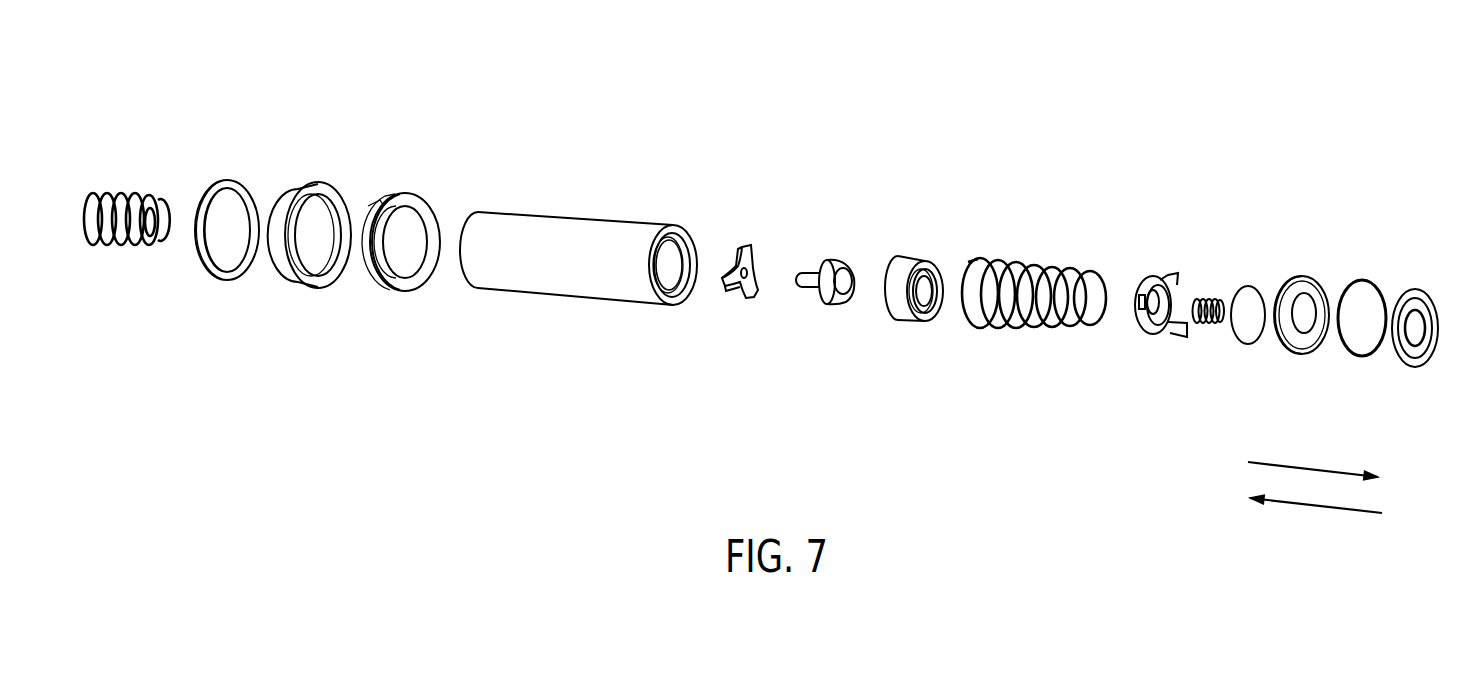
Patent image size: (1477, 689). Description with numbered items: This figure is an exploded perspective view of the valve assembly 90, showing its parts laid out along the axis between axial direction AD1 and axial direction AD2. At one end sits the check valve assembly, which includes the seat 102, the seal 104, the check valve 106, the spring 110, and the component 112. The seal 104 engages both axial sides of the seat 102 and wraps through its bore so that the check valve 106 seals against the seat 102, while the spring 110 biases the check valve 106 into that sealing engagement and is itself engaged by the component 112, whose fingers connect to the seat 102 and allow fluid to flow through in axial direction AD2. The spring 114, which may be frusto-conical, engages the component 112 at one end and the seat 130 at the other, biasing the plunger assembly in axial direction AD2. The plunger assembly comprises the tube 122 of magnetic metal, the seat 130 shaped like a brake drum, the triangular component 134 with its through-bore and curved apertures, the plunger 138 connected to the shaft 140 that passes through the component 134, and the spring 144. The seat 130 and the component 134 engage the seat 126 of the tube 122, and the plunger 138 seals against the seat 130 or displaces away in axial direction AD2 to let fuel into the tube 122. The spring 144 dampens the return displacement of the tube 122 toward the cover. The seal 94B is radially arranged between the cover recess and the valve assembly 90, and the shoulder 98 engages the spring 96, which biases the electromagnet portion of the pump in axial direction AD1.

The valve assembly 90 is at (1195, 112).
The spring 144 is at (115, 208).
The seal 94B is at (222, 188).
The shoulder 98 is at (285, 200).
The spring 96 is at (420, 208).
The tube 122 is at (575, 237).
The seat 126 is at (675, 232).
The component 134 is at (747, 247).
The shaft 140 is at (808, 278).
The plunger 138 is at (838, 272).
The seat 130 is at (907, 268).
The spring 114 is at (1052, 268).
The component 112 is at (1157, 282).
The spring 110 is at (1210, 298).
The check valve 106 is at (1250, 300).
The seat 102 is at (1317, 288).
The seal 104 is at (1425, 295).
The axial direction AD1 is at (1307, 467).
The axial direction AD2 is at (1318, 508).